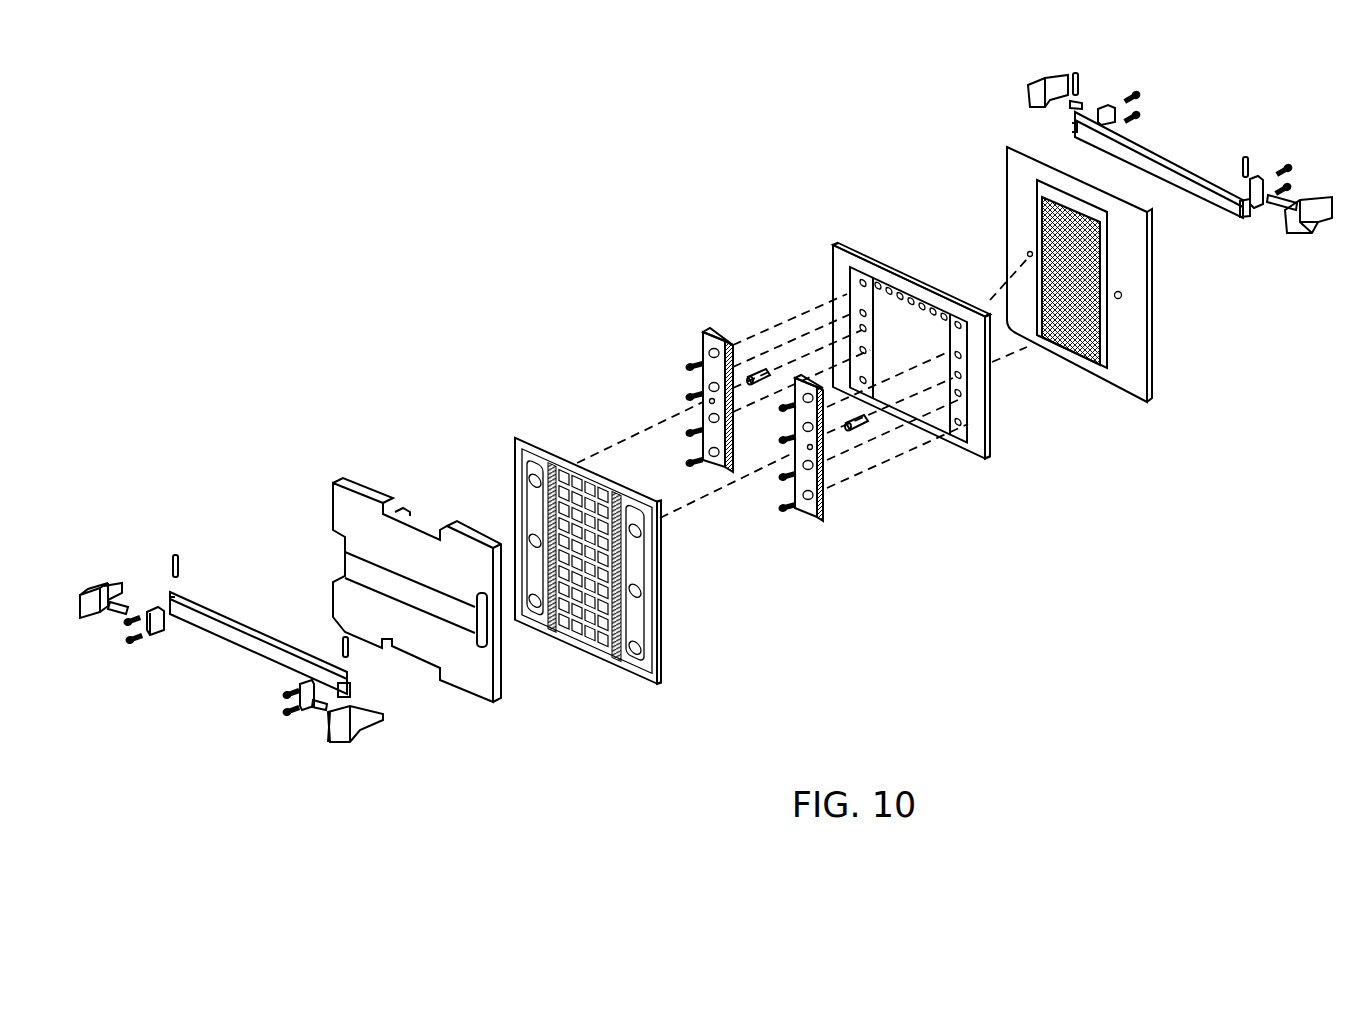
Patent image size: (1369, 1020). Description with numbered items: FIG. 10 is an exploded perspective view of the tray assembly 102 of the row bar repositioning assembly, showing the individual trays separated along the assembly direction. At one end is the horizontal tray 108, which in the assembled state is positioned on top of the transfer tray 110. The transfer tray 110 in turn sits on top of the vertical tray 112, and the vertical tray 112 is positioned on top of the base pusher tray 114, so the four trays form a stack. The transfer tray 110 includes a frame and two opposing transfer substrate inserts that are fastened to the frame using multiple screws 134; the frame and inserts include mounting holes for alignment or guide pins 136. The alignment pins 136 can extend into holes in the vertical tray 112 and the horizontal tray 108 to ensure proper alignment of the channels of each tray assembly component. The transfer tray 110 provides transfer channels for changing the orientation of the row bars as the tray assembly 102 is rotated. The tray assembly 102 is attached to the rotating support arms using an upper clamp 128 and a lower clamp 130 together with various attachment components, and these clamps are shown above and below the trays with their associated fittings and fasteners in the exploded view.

The tray assembly 102 is at (497, 204).
The horizontal tray 108 is at (1152, 390).
The transfer tray 110 is at (1018, 470).
The vertical tray 112 is at (660, 680).
The base pusher tray 114 is at (455, 692).
The upper clamp 128 is at (1186, 162).
The lower clamp 130 is at (222, 644).
The screw 134 is at (783, 513).
The alignment pin 136 is at (866, 428).